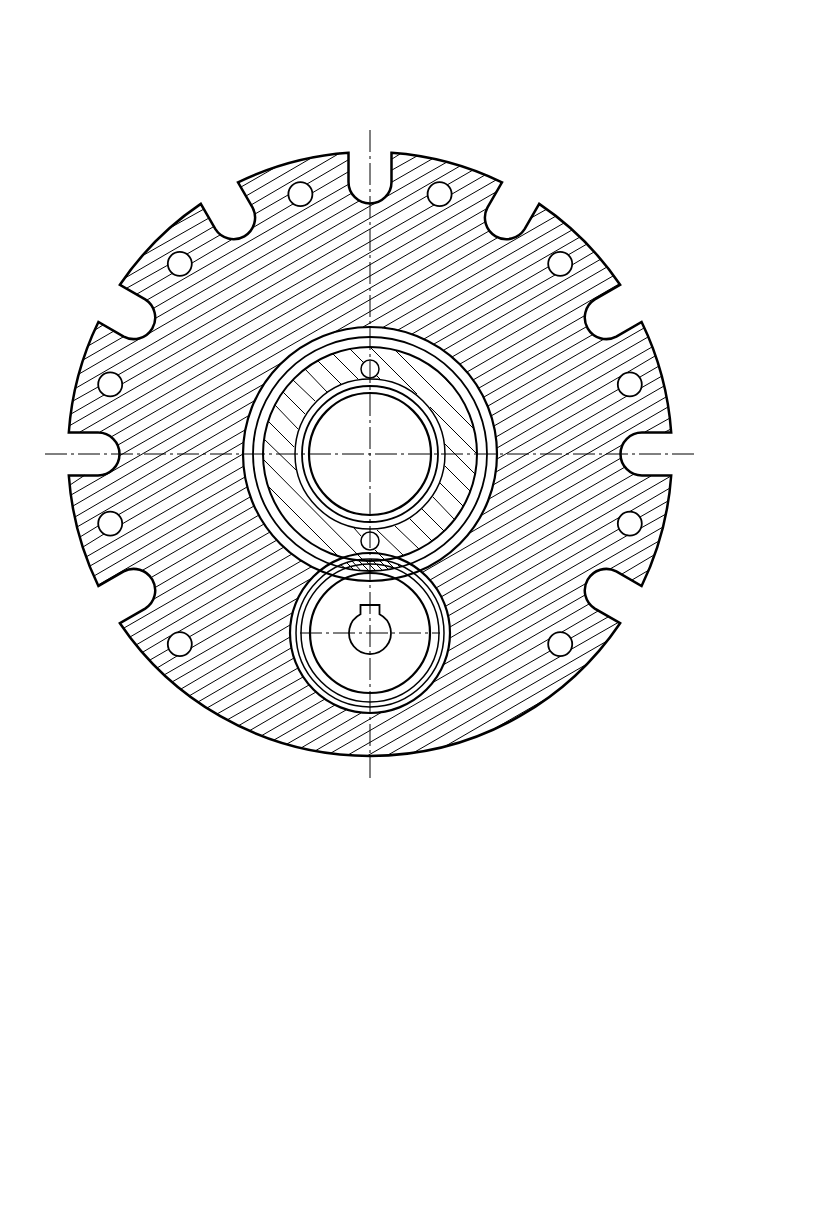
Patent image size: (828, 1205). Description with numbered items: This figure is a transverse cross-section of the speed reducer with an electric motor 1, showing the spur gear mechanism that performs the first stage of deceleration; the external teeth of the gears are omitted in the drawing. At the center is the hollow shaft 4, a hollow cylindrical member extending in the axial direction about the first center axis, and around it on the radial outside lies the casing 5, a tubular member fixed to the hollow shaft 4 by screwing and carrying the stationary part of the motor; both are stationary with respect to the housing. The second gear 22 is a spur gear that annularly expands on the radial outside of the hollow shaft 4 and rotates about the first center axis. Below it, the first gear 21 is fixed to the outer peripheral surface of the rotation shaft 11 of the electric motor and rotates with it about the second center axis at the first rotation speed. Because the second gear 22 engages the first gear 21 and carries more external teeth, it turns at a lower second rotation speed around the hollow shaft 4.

The speed reducer with an electric motor 1 is at (452, 65).
The hollow shaft 4 is at (340, 373).
The casing 5 is at (543, 232).
The rotation shaft 11 is at (377, 642).
The first gear 21 is at (337, 655).
The second gear 22 is at (292, 413).